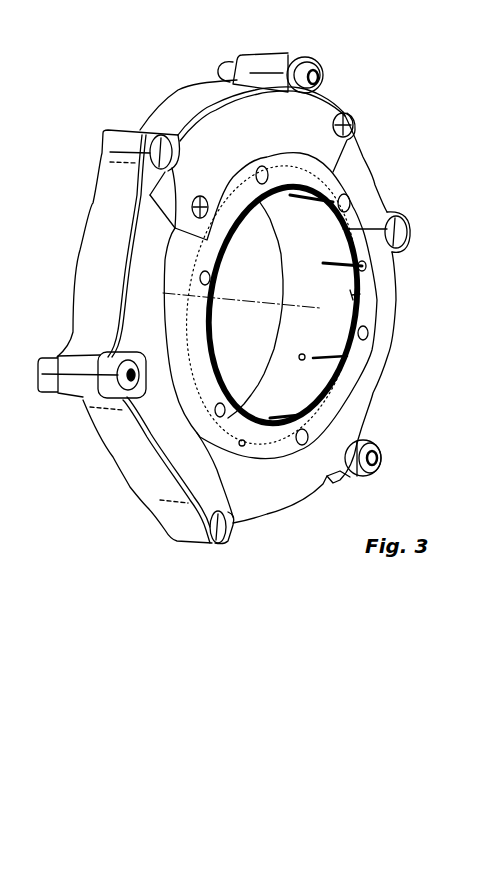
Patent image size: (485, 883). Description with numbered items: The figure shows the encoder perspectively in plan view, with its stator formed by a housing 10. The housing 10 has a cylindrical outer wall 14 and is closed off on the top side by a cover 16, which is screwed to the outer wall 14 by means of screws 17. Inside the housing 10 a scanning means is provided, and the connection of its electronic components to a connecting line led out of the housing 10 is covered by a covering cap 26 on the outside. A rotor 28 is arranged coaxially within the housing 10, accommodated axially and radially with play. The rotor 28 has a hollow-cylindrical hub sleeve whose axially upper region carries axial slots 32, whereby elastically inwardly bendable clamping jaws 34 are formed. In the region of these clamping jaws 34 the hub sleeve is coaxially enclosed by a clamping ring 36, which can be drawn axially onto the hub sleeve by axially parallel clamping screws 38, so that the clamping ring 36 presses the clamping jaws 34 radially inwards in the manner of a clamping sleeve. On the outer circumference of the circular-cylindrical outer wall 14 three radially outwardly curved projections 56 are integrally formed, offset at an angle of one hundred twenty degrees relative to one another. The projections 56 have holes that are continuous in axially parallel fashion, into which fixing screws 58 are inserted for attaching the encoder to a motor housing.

The housing 10 is at (130, 496).
The outer wall 14 is at (113, 447).
The cover 16 is at (137, 290).
The screws 17 is at (402, 222).
The covering cap 26 is at (315, 118).
The rotor 28 is at (305, 359).
The axial slots 32 is at (366, 264).
The clamping jaws 34 is at (355, 295).
The clamping ring 36 is at (244, 446).
The clamping screws 38 is at (368, 333).
The projections 56 is at (267, 57).
The fixing screws 58 is at (303, 72).